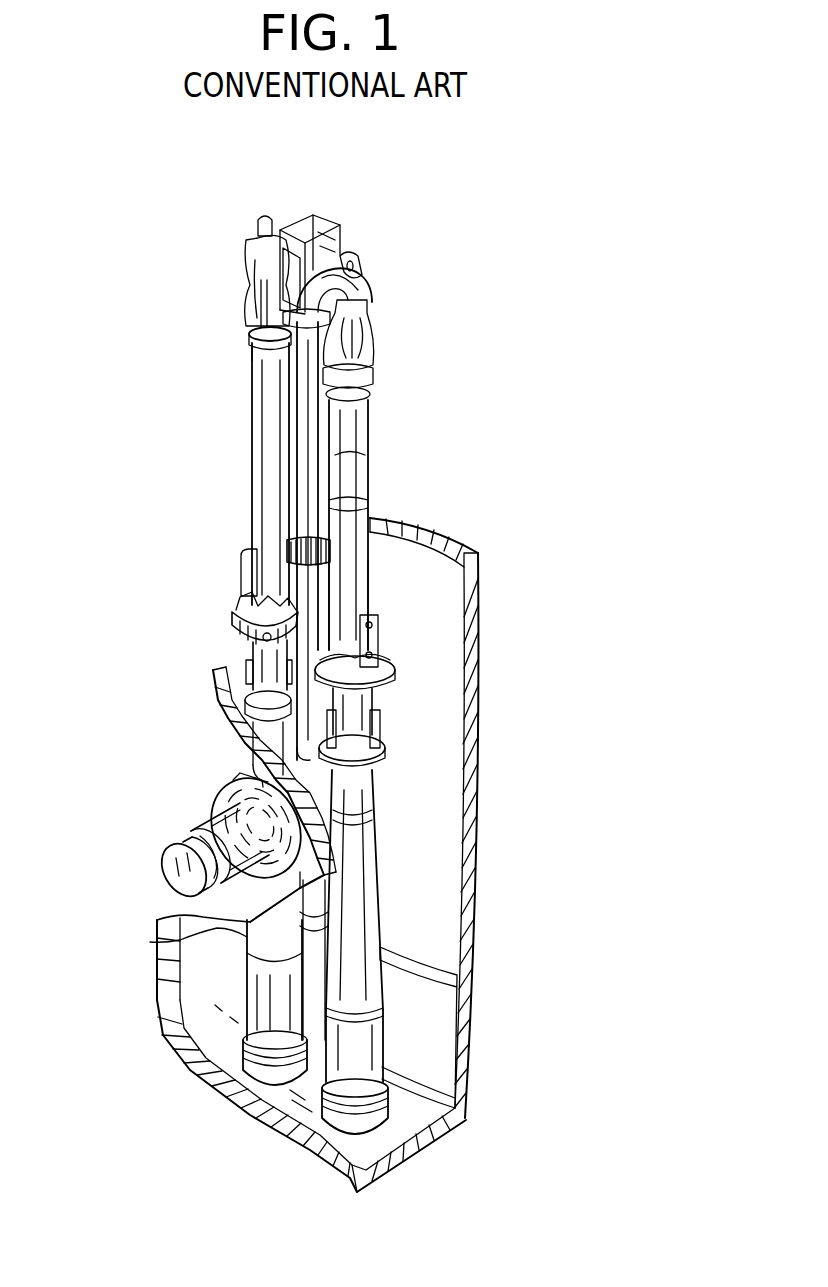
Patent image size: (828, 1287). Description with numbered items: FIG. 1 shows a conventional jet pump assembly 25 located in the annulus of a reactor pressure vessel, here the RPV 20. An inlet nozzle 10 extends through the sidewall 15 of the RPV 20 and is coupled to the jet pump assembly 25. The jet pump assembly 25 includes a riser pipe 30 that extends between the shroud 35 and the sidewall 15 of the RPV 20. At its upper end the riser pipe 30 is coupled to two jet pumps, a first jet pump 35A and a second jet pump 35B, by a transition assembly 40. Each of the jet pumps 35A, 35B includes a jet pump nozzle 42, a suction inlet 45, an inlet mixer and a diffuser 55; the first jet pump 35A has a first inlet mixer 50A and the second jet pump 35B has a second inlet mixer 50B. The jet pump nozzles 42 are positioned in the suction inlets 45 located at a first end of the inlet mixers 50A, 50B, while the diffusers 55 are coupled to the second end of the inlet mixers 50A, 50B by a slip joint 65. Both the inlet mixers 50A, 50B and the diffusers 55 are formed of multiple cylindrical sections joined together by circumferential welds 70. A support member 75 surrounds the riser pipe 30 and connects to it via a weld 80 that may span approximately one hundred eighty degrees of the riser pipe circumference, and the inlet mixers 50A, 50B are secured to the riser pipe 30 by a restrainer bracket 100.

The inlet nozzle 10 is at (180, 800).
The sidewall 15 is at (215, 690).
The RPV 20 is at (565, 650).
The jet pump assembly 25 is at (220, 425).
The riser pipe 30 is at (345, 455).
The shroud 35 is at (475, 605).
The first jet pump 35A is at (390, 420).
The second jet pump 35B is at (230, 465).
The transition assembly 40 is at (334, 215).
The jet pump nozzle 42 is at (250, 300).
The suction inlet 45 is at (248, 335).
The first inlet mixer 50A is at (252, 503).
The second inlet mixer 50B is at (370, 578).
The diffuser 55 is at (378, 900).
The slip joint 65 is at (385, 720).
The circumferential weld 70 is at (352, 500).
The support member 75 is at (290, 560).
The weld 80 is at (295, 545).
The restrainer bracket 100 is at (390, 630).